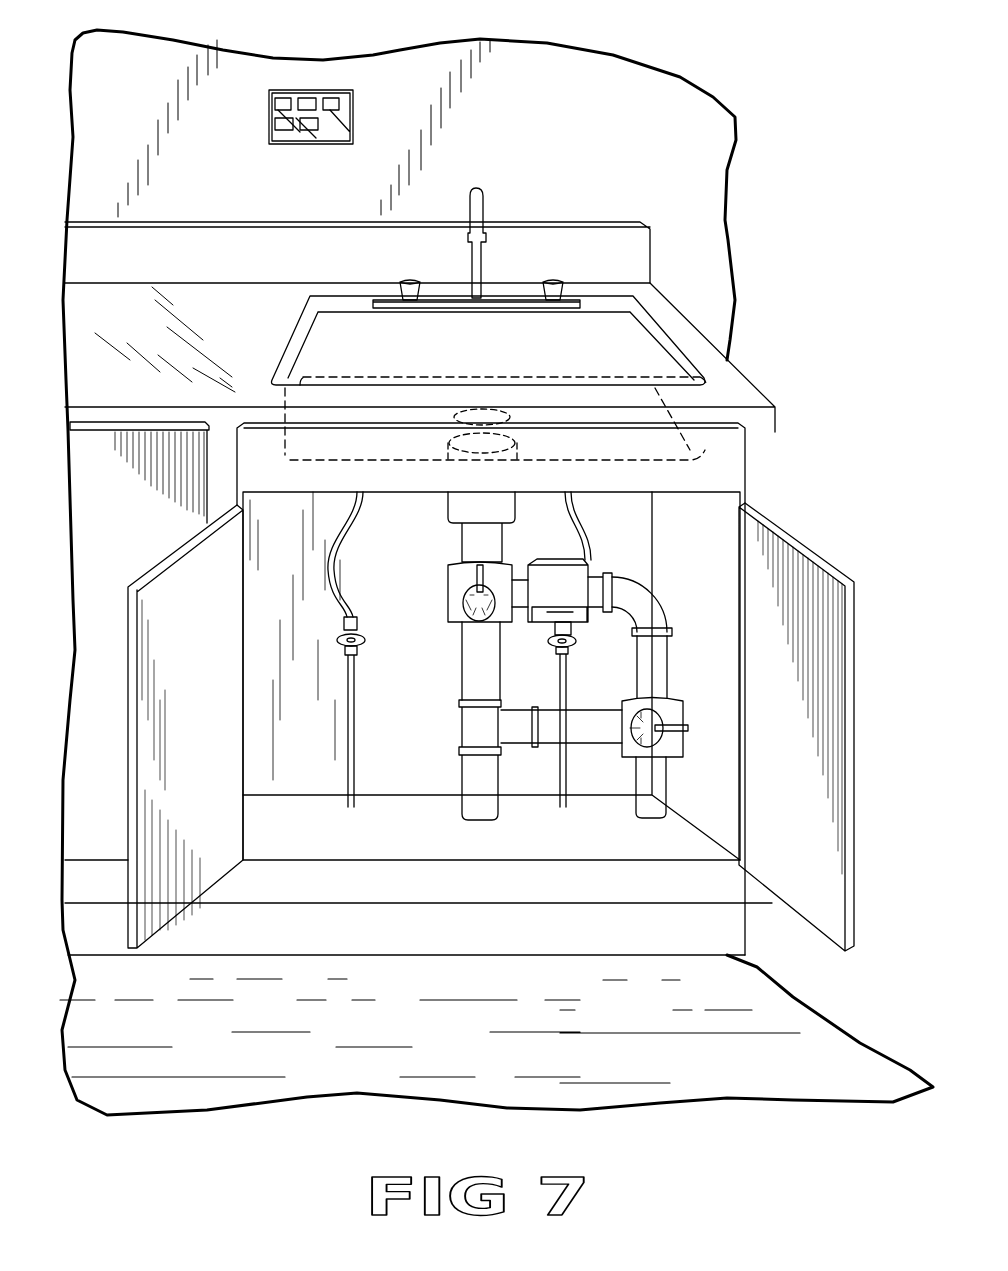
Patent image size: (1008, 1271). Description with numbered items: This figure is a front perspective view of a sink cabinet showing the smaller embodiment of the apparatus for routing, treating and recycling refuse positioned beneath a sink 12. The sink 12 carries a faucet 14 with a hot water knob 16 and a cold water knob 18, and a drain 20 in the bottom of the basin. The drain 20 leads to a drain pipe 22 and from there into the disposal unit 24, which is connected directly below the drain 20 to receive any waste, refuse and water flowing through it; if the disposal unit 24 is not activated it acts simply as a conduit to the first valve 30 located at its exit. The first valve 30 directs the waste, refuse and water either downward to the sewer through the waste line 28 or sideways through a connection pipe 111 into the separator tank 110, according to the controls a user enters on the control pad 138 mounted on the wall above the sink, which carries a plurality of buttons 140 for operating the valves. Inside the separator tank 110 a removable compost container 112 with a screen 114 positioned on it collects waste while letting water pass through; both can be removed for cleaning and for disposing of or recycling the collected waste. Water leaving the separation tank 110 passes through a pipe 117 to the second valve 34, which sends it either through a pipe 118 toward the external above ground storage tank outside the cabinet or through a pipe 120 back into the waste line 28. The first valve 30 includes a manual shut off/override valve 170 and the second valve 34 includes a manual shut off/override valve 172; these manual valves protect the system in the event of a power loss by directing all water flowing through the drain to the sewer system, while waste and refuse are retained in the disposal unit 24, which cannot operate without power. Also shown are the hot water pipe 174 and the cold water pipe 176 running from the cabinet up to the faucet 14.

The sink 12 is at (600, 345).
The faucet 14 is at (478, 210).
The hot water knob 16 is at (410, 290).
The cold water knob 18 is at (553, 290).
The drain 20 is at (482, 413).
The drain pipe 22 is at (492, 435).
The disposal unit 24 is at (487, 537).
The waste line 28 is at (483, 673).
The first valve 30 is at (503, 603).
The second valve 34 is at (668, 710).
The separator tank 110 is at (558, 590).
The connection pipe 111 is at (518, 593).
The removable compost container 112 is at (577, 632).
The screen 114 is at (600, 592).
The pipe 117 is at (642, 611).
The pipe 118 is at (658, 773).
The pipe 120 is at (594, 727).
The control pad 138 is at (300, 145).
The buttons 140 is at (333, 97).
The manual shut off/override valve 170 is at (462, 595).
The manual shut off/override valve 172 is at (686, 722).
The hot water pipe 174 is at (333, 580).
The cold water pipe 176 is at (580, 532).